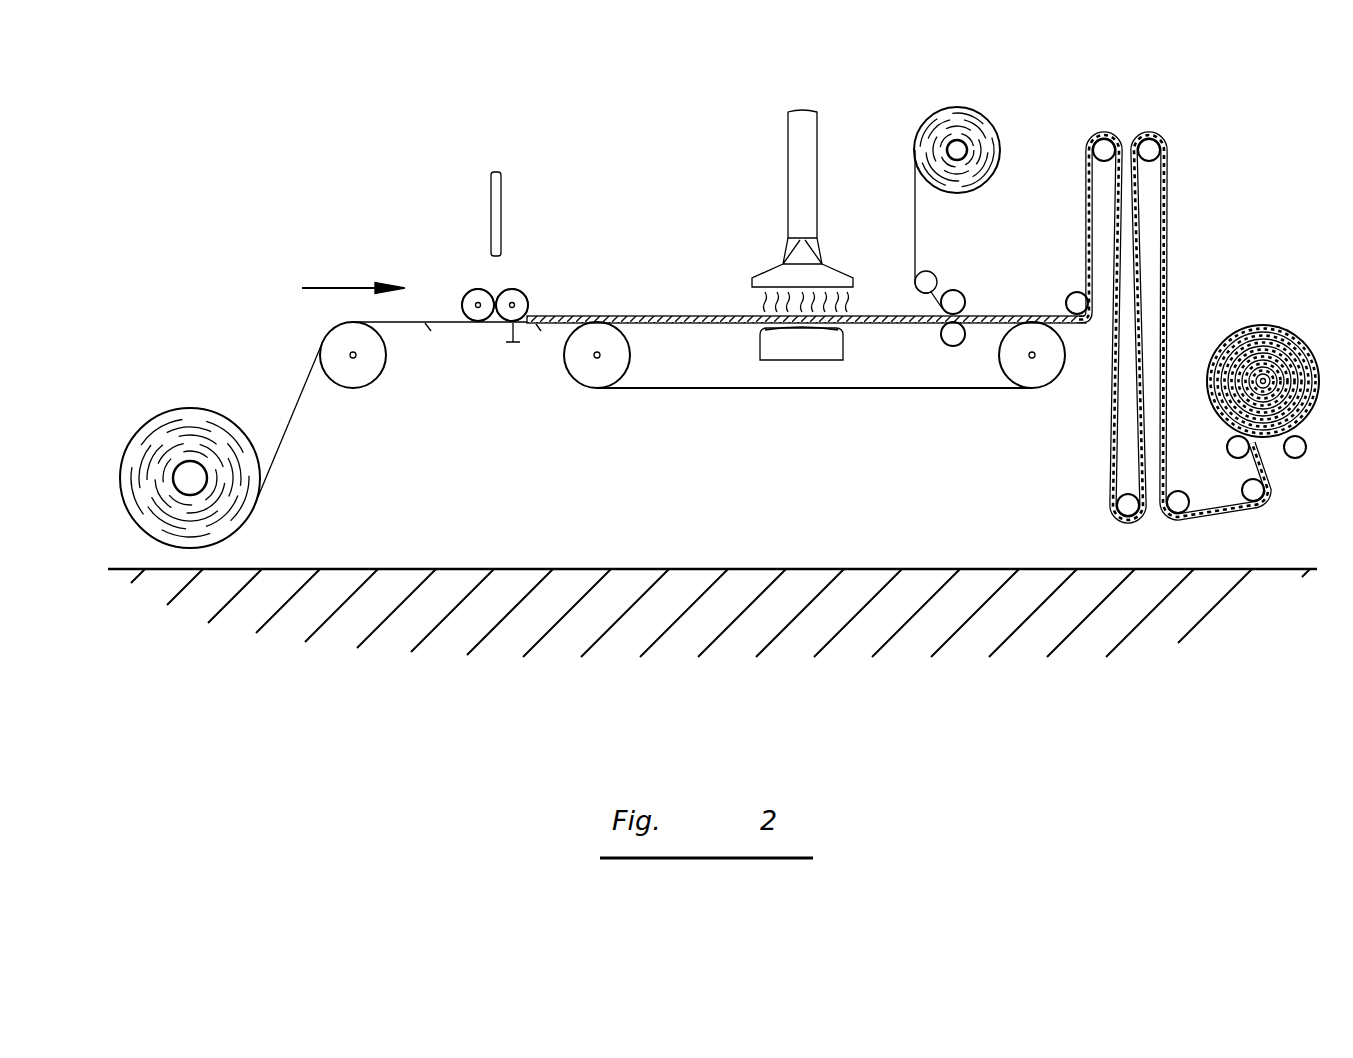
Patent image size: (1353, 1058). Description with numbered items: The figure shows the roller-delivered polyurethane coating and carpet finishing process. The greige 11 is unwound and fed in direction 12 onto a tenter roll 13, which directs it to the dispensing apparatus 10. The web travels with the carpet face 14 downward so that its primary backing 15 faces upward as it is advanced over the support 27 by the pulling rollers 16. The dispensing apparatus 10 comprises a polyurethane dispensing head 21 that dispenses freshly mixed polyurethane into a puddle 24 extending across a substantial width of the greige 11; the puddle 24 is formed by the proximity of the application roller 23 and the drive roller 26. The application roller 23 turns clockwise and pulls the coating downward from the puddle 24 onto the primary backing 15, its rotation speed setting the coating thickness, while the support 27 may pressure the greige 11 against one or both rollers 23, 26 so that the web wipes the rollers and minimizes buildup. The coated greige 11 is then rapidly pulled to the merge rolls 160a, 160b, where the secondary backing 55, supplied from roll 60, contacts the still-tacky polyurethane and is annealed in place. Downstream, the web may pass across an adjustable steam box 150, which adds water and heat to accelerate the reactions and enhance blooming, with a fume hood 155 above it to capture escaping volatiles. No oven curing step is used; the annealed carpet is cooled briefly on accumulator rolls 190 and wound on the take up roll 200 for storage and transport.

The dispensing apparatus 10 is at (542, 273).
The greige 11 is at (168, 412).
The direction 12 is at (333, 288).
The tenter roll 13 is at (370, 375).
The carpet face 14 is at (288, 470).
The primary backing 15 is at (280, 390).
The pulling rollers 16 is at (598, 388).
The polyurethane dispensing head 21 is at (480, 188).
The application roller 23 is at (475, 287).
The puddle 24 is at (497, 287).
The drive roller 26 is at (523, 295).
The support 27 is at (508, 343).
The secondary backing 55 is at (910, 192).
The roll 60 is at (958, 103).
The steam box 150 is at (777, 350).
The fume hood 155 is at (790, 272).
The merge roll 160a is at (957, 287).
The merge roll 160b is at (955, 343).
The accumulator rolls 190 is at (1134, 117).
The take up roll 200 is at (1290, 327).